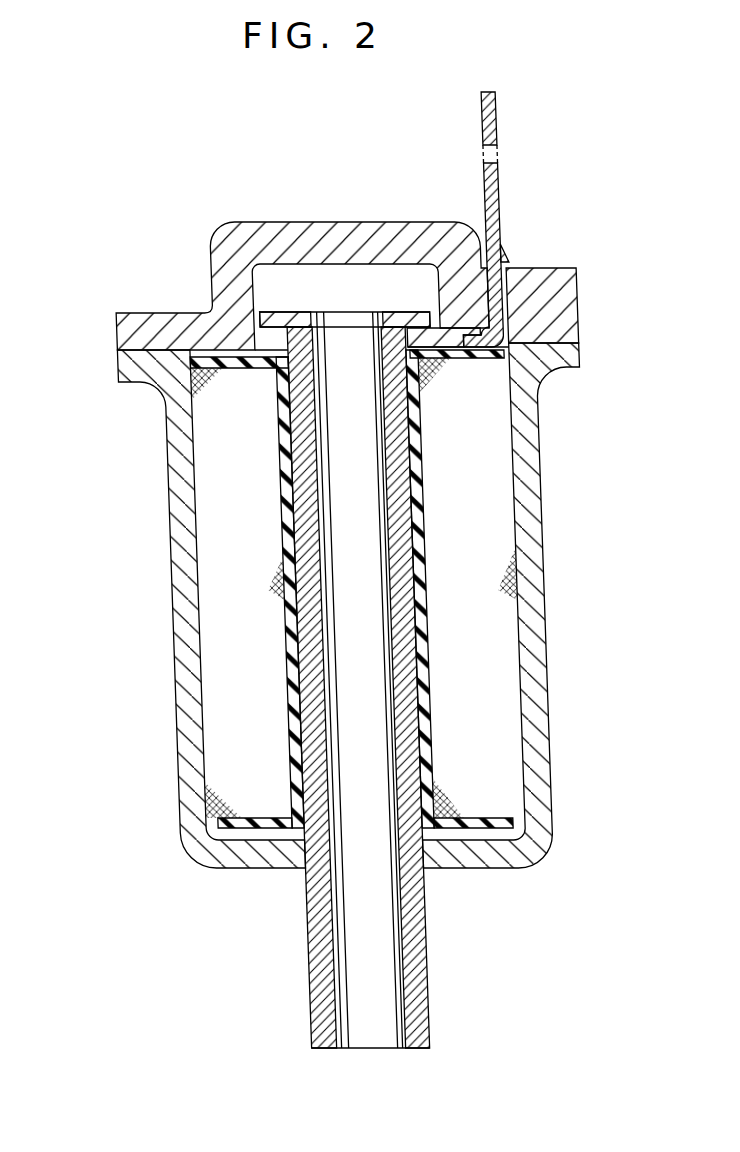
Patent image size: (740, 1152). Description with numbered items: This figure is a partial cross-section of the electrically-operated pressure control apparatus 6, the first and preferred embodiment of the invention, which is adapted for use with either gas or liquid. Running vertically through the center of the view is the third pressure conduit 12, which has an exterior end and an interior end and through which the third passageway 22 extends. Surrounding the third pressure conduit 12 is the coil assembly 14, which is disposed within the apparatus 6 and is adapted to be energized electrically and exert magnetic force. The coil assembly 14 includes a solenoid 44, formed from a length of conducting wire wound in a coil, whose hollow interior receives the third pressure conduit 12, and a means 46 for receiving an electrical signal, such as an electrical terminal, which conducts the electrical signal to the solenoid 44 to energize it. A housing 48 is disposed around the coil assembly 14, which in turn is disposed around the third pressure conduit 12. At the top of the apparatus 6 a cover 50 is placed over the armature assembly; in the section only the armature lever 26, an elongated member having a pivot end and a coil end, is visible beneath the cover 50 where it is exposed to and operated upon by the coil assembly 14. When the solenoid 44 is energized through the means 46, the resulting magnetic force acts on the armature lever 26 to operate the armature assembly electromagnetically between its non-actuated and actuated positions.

The electrically-operated pressure control apparatus 6 is at (329, 570).
The third pressure conduit 12 is at (327, 946).
The coil assembly 14 is at (329, 568).
The third passageway 22 is at (338, 513).
The armature lever 26 is at (283, 320).
The solenoid 44 is at (248, 575).
The means for receiving an electrical signal 46 is at (497, 199).
The housing 48 is at (173, 652).
The cover 50 is at (296, 222).